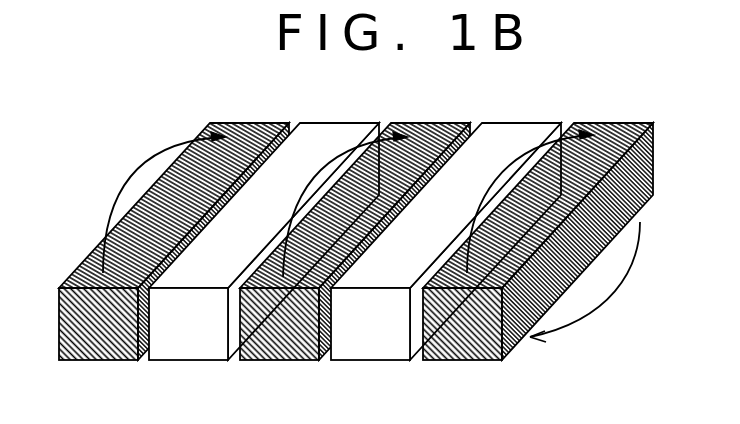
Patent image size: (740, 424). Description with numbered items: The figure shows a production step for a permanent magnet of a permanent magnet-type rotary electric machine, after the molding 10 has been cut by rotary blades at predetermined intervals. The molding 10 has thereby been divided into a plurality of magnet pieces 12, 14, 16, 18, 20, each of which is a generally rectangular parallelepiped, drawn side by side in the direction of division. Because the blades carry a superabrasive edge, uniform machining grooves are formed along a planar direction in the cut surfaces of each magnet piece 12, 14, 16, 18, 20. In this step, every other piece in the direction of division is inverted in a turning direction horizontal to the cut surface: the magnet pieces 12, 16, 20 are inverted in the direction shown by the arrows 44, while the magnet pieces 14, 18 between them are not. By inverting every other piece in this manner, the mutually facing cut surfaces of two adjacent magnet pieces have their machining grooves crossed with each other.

The molding 10 is at (612, 97).
The magnet piece 12 is at (105, 342).
The magnet piece 14 is at (192, 340).
The magnet piece 16 is at (278, 342).
The magnet piece 18 is at (372, 340).
The magnet piece 20 is at (463, 342).
The arrows 44 is at (158, 155).